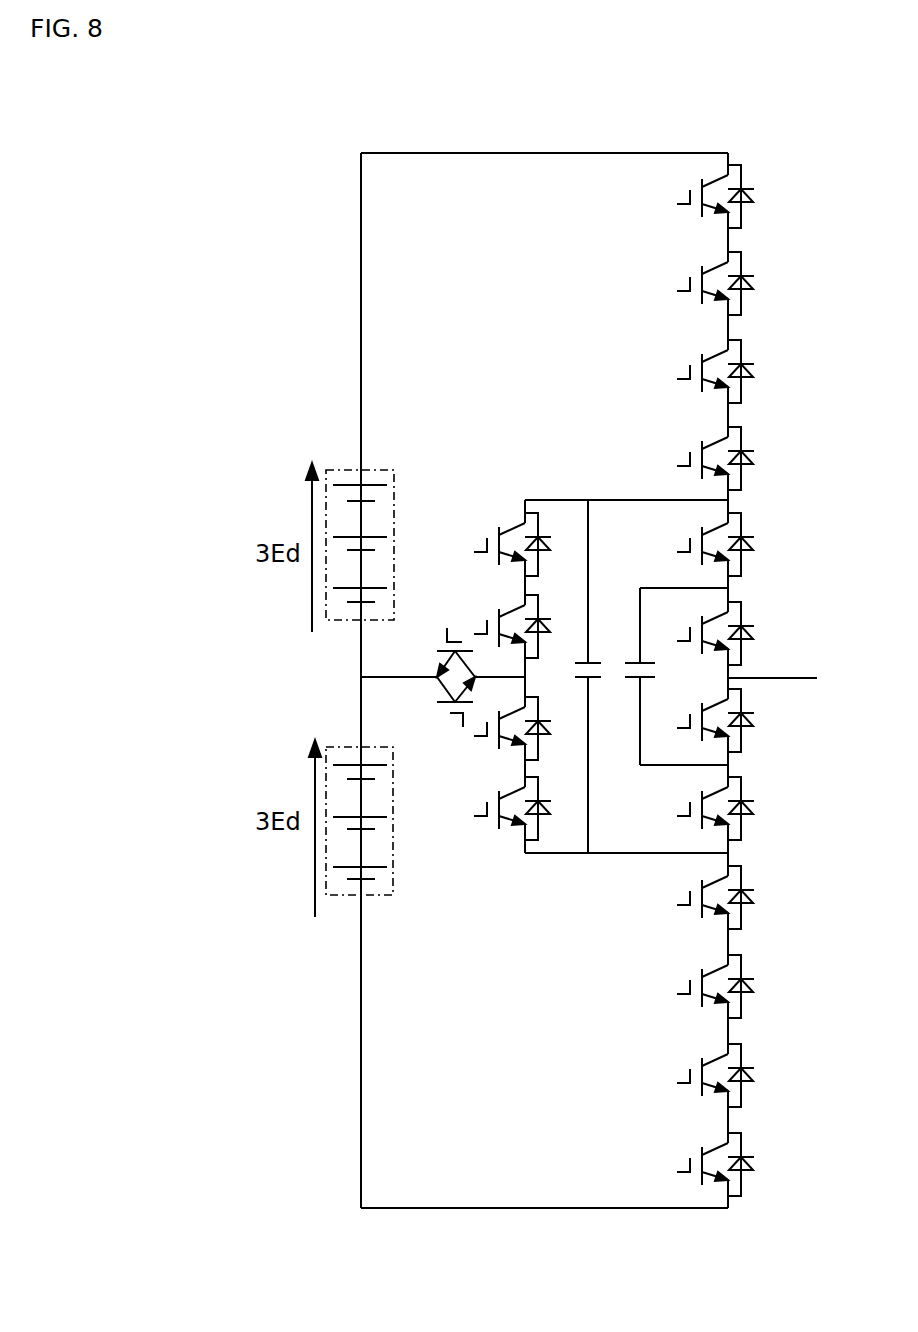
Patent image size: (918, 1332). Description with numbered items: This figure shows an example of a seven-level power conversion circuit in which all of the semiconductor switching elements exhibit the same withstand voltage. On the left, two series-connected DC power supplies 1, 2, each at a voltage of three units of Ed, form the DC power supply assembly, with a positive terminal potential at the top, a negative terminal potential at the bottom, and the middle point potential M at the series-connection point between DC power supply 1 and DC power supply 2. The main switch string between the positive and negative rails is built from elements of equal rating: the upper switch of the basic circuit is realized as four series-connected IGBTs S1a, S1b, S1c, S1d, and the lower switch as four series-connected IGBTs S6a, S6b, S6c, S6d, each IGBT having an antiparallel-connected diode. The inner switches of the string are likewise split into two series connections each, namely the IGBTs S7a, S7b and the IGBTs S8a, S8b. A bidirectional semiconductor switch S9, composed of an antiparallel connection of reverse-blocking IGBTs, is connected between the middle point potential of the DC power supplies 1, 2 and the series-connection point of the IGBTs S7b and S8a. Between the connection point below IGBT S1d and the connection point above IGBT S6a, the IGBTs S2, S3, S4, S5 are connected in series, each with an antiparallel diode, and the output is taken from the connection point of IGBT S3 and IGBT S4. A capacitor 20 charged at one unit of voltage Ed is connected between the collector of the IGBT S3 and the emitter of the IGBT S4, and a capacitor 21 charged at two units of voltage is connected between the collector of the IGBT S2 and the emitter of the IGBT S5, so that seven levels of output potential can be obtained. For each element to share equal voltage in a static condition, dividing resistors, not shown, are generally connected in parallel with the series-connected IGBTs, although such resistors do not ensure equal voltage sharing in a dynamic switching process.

The DC power supply 1 is at (360, 527).
The DC power supply 2 is at (359, 835).
The capacitor 20 is at (676, 676).
The capacitor 21 is at (601, 676).
The IGBT S1a is at (736, 196).
The IGBT S1b is at (736, 283).
The IGBT S1c is at (735, 371).
The IGBT S1d is at (736, 458).
The IGBT S2 is at (729, 544).
The IGBT S3 is at (729, 633).
The IGBT S4 is at (729, 720).
The IGBT S5 is at (729, 808).
The IGBT S6a is at (736, 897).
The IGBT S6b is at (736, 986).
The IGBT S6c is at (735, 1075).
The IGBT S6d is at (736, 1164).
The IGBT S7a is at (511, 534).
The IGBT S7b is at (511, 620).
The IGBT S8a is at (505, 736).
The IGBT S8b is at (505, 820).
The bidirectional semiconductor switch S9 is at (436, 677).